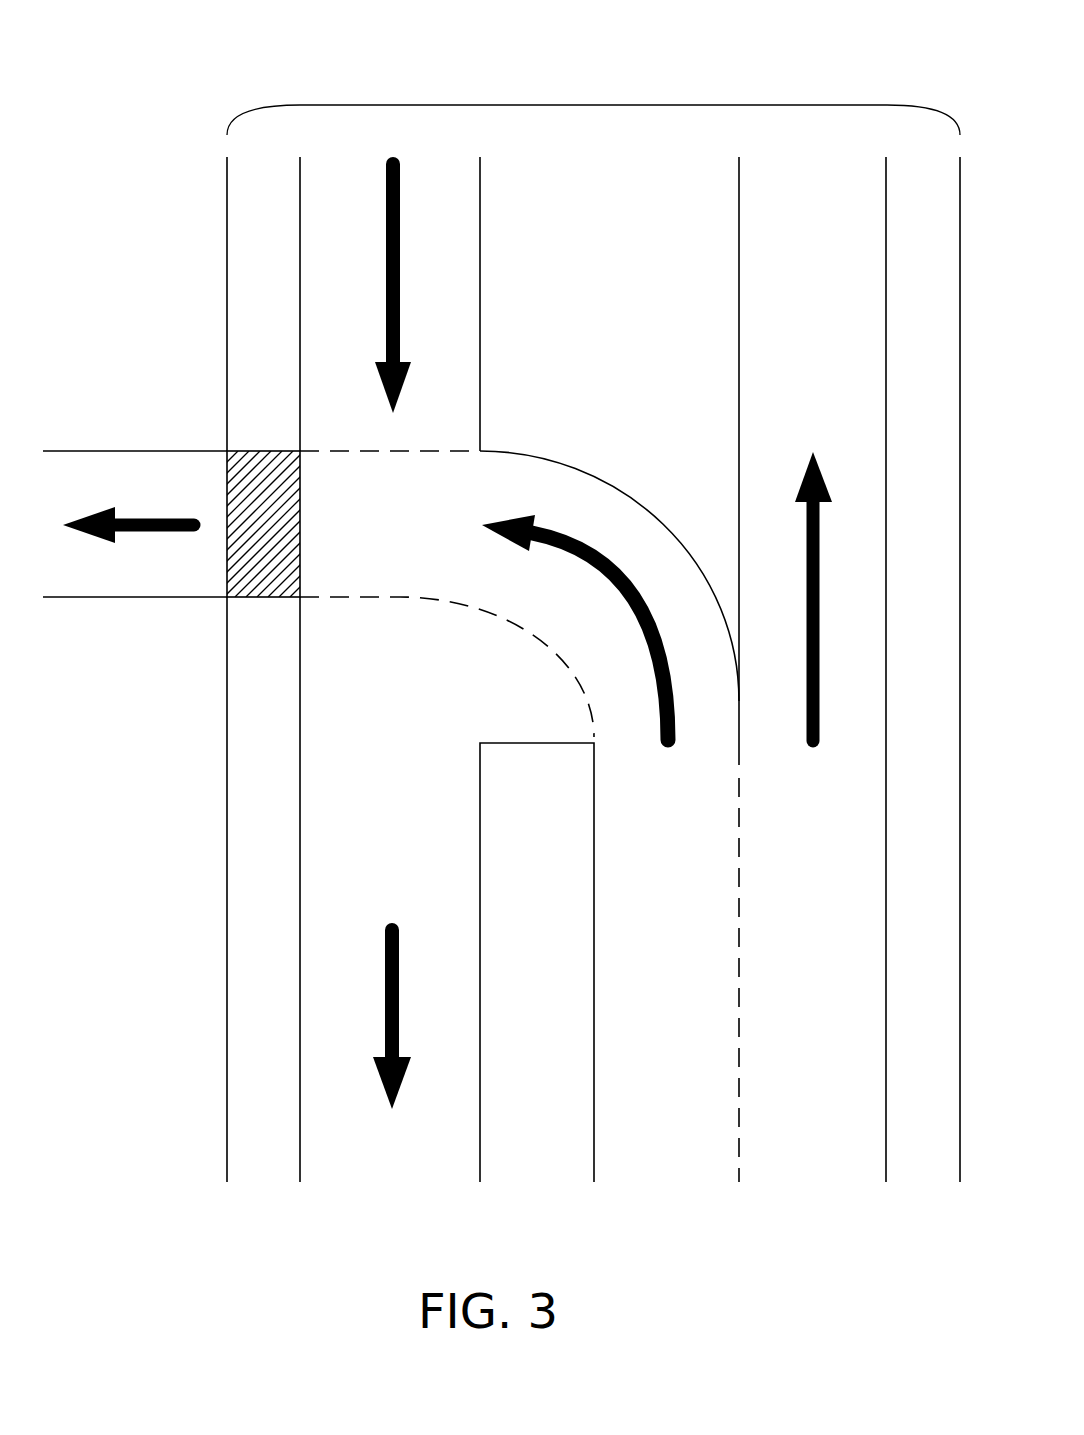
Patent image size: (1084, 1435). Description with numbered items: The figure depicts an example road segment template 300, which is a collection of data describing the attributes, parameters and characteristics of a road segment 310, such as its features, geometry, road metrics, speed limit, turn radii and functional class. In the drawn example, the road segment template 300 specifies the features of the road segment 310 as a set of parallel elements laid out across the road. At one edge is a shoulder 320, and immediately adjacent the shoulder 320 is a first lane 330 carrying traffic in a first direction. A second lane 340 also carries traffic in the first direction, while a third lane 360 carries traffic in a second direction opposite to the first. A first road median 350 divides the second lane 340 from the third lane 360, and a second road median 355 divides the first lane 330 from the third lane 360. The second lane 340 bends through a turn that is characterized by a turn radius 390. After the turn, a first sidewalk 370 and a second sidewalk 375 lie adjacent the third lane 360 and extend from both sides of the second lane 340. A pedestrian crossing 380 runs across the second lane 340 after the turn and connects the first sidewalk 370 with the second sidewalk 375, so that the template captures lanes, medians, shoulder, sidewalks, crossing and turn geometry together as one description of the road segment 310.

The road segment template 300 is at (227, 50).
The road segment 310 is at (593, 105).
The shoulder 320 is at (922, 1148).
The first lane 330 is at (796, 669).
The second lane 340 is at (594, 753).
The first road median 350 is at (539, 1148).
The second road median 355 is at (519, 429).
The third lane 360 is at (393, 636).
The first sidewalk 370 is at (264, 1148).
The second sidewalk 375 is at (263, 303).
The pedestrian crossing 380 is at (262, 546).
The turn radius 390 is at (489, 622).